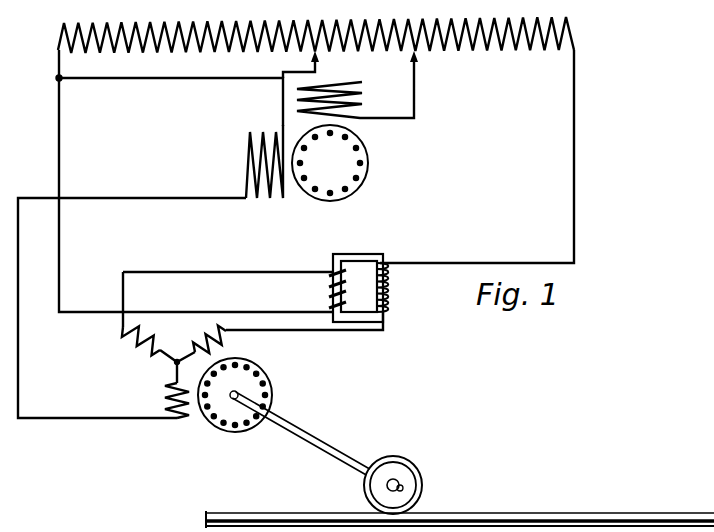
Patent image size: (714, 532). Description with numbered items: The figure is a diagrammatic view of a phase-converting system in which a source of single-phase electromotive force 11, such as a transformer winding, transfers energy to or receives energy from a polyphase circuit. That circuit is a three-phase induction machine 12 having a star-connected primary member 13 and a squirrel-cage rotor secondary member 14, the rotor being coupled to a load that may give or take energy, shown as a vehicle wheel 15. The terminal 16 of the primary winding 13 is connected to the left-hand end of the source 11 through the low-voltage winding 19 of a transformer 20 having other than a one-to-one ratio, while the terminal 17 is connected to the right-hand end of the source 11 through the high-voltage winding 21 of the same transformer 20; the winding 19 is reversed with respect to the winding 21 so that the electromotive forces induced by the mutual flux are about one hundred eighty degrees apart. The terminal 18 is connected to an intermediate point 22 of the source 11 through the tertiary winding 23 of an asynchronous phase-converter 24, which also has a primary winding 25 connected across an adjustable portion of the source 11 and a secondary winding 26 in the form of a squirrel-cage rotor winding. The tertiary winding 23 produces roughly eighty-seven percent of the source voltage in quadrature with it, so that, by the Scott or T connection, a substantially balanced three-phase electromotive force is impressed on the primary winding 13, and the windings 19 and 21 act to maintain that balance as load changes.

The source of single-phase electromotive force 11 is at (312, 28).
The intermediate point 22 is at (317, 67).
The primary winding 25 is at (356, 92).
The secondary winding 26 is at (360, 153).
The asynchronous phase-converter 24 is at (405, 179).
The tertiary winding 23 is at (262, 199).
The low-voltage winding 19 is at (328, 292).
The transformer 20 is at (358, 294).
The high-voltage winding 21 is at (386, 295).
The terminal 16 is at (124, 336).
The star-connected primary member 13 is at (163, 343).
The terminal 17 is at (228, 335).
The three-phase induction machine 12 is at (148, 395).
The squirrel-cage rotor secondary member 14 is at (257, 373).
The terminal 18 is at (174, 419).
The vehicle wheel 15 is at (407, 481).